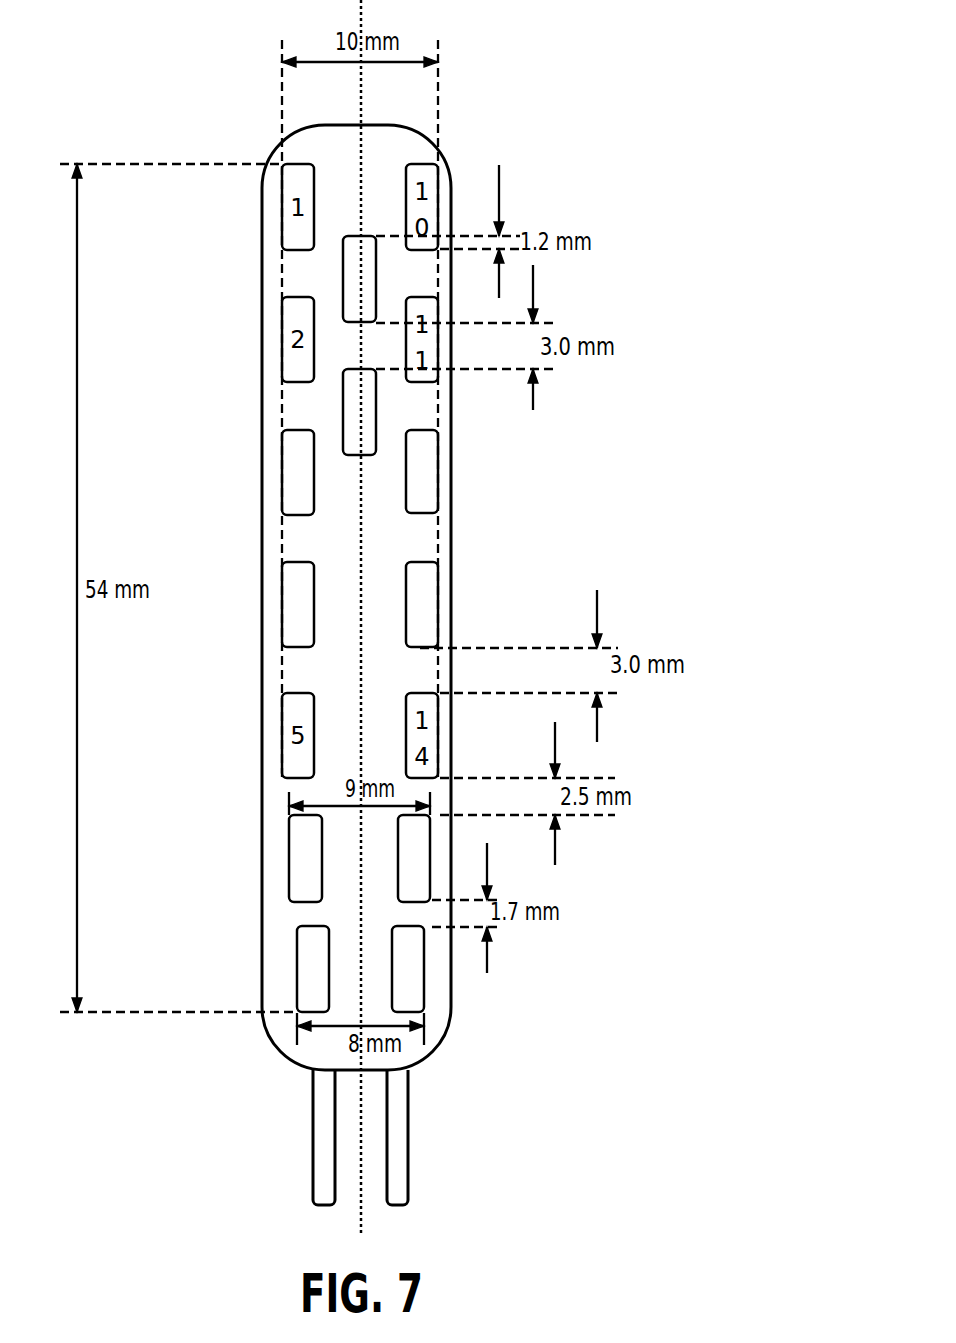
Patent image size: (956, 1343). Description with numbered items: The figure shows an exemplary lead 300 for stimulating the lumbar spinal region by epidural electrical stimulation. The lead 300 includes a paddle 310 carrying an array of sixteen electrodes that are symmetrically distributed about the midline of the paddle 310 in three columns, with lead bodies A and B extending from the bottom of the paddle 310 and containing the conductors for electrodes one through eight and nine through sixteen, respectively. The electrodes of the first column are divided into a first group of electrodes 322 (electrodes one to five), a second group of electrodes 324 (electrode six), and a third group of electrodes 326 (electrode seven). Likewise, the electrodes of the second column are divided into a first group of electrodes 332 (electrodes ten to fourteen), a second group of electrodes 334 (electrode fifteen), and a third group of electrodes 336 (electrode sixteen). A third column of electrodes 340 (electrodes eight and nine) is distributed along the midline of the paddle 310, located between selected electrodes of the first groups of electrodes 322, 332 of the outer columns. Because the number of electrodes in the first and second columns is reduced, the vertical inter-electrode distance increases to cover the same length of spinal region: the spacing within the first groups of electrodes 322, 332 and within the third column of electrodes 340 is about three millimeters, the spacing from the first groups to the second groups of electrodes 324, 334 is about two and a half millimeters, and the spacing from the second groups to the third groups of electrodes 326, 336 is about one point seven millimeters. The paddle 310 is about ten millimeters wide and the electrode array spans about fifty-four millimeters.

The lead 300 is at (467, 618).
The paddle 310 is at (452, 775).
The first group of electrodes 322 is at (288, 600).
The second group of electrodes 324 is at (288, 869).
The third group of electrodes 326 is at (298, 956).
The first group of electrodes 332 is at (438, 600).
The second group of electrodes 334 is at (430, 847).
The third group of electrodes 336 is at (423, 957).
The third column of electrodes 340 is at (341, 423).